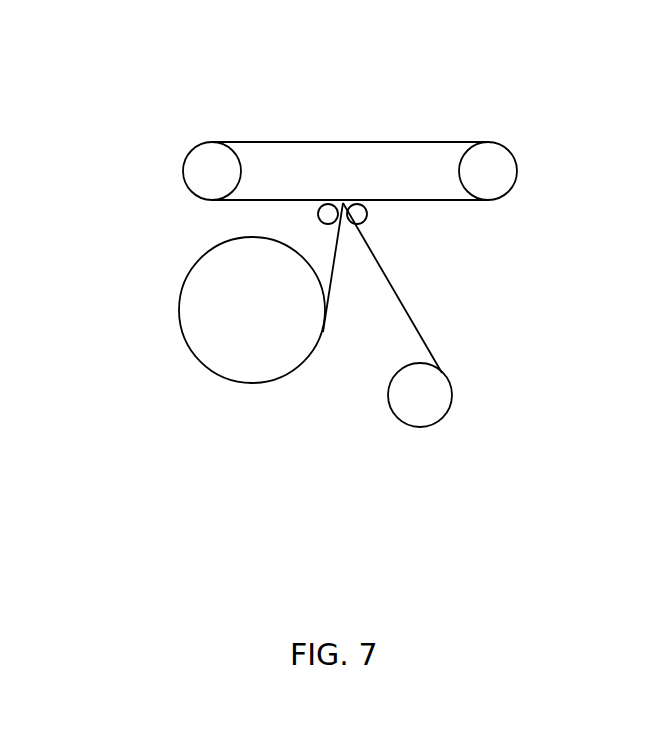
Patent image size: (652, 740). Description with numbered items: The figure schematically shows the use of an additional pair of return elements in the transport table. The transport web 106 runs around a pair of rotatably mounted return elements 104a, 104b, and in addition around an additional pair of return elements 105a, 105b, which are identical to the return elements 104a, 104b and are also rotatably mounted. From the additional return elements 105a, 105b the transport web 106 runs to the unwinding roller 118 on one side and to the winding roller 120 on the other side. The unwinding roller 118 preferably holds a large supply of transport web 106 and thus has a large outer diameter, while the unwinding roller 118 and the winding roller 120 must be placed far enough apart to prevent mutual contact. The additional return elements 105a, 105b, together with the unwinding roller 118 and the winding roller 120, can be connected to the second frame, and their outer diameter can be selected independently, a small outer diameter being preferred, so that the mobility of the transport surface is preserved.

The return element 104a is at (204, 168).
The return element 104b is at (496, 170).
The additional return element 105a is at (328, 214).
The additional return element 105b is at (357, 214).
The transport web 106 is at (378, 272).
The unwinding roller 118 is at (222, 323).
The winding roller 120 is at (430, 397).